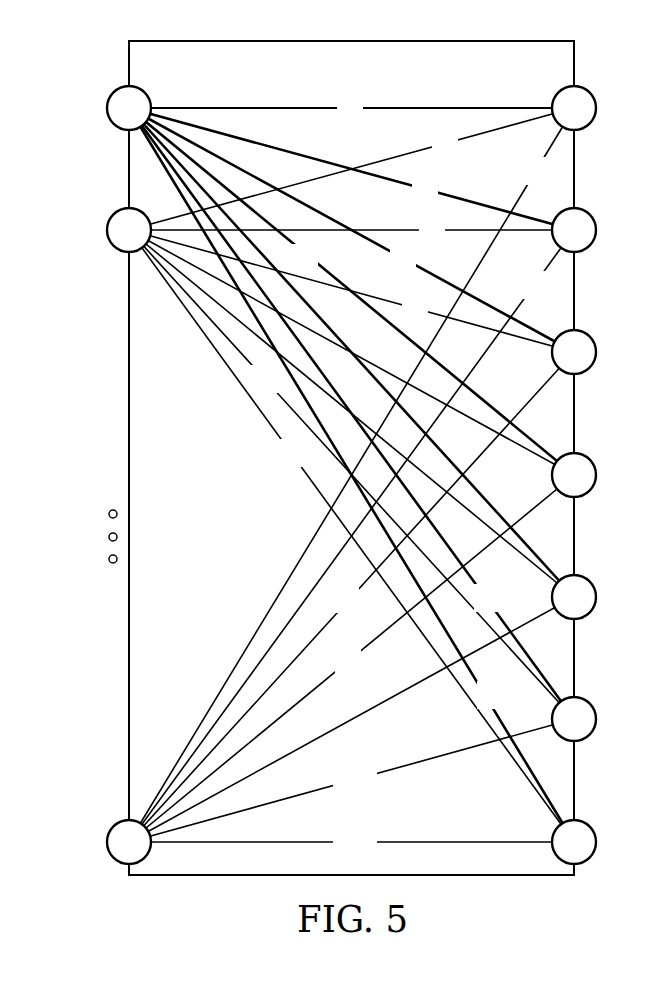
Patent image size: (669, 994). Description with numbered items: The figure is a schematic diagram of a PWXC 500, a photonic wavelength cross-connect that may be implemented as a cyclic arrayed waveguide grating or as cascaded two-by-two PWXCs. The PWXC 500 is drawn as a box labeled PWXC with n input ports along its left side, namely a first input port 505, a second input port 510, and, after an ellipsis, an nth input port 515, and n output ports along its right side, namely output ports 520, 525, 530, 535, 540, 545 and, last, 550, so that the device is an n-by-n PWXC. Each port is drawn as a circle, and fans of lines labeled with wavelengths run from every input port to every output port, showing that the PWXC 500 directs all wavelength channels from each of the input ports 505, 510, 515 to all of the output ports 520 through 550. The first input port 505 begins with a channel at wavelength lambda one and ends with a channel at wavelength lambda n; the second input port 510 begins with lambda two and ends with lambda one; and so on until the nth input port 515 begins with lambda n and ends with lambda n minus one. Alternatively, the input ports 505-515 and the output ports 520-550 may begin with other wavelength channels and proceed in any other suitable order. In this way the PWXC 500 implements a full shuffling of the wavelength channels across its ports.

The PWXC 500 is at (120, 412).
The first input port 505 is at (110, 101).
The second input port 510 is at (110, 223).
The nth input port 515 is at (110, 850).
The output port 520 is at (596, 100).
The output port 525 is at (596, 222).
The output port 530 is at (596, 349).
The output port 535 is at (596, 480).
The output port 540 is at (596, 602).
The output port 545 is at (596, 725).
The output port 550 is at (596, 851).